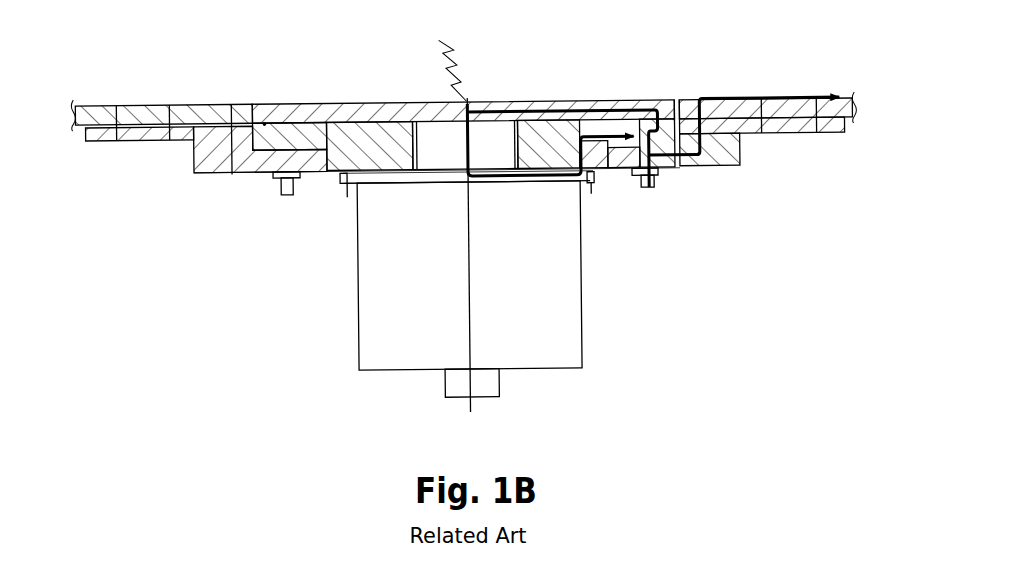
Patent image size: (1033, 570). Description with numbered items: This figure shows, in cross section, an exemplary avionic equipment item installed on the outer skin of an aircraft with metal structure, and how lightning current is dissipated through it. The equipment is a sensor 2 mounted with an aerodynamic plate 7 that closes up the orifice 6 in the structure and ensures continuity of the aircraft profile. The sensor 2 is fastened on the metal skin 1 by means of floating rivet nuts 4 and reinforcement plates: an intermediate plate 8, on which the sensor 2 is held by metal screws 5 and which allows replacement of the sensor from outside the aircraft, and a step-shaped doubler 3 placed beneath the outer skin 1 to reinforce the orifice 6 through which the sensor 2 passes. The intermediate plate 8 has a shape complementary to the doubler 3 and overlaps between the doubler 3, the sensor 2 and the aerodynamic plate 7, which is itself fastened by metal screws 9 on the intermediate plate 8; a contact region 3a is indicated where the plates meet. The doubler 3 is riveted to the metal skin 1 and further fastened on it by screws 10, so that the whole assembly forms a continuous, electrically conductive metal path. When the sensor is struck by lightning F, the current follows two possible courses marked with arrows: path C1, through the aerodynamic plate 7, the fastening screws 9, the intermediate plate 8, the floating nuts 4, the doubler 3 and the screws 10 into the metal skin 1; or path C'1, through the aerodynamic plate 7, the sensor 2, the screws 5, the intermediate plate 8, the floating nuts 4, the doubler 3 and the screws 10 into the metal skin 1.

The metal skin 1 is at (132, 100).
The sensor 2 is at (469, 290).
The doubler 3 is at (208, 160).
The contact point 3a is at (265, 121).
The floating rivet nuts 4 is at (290, 191).
The metal screws 5 is at (343, 186).
The orifice 6 is at (680, 91).
The aerodynamic plate 7 is at (350, 103).
The intermediate plate 8 is at (385, 135).
The metal screws 9 is at (273, 136).
The screws 10 is at (235, 171).
The lightning F is at (447, 63).
The current path C1 is at (773, 101).
The current path C'1 is at (563, 190).